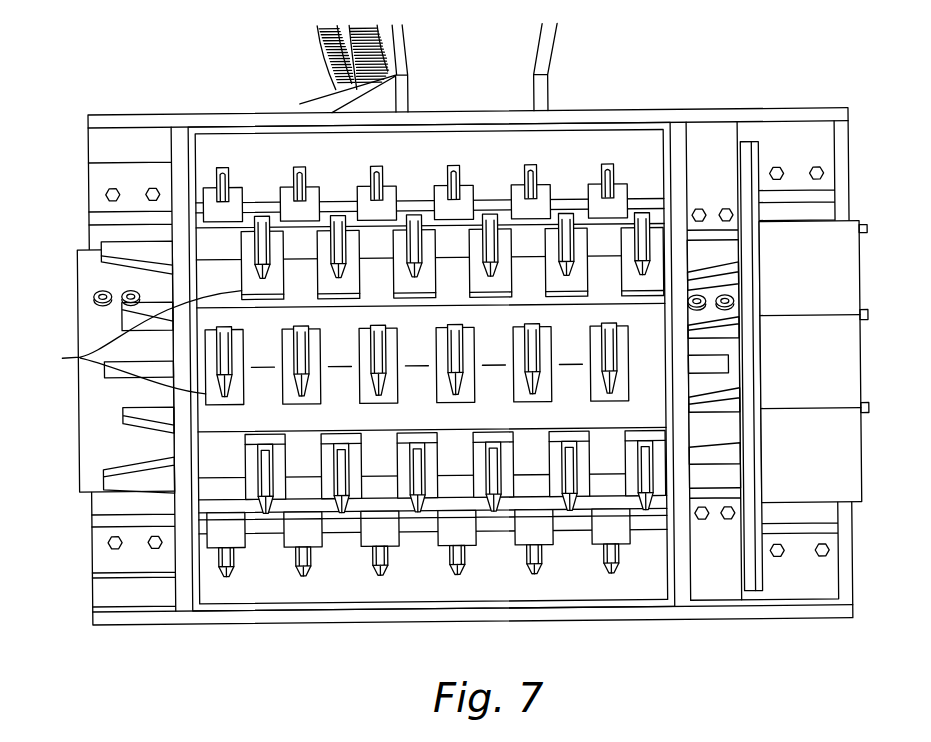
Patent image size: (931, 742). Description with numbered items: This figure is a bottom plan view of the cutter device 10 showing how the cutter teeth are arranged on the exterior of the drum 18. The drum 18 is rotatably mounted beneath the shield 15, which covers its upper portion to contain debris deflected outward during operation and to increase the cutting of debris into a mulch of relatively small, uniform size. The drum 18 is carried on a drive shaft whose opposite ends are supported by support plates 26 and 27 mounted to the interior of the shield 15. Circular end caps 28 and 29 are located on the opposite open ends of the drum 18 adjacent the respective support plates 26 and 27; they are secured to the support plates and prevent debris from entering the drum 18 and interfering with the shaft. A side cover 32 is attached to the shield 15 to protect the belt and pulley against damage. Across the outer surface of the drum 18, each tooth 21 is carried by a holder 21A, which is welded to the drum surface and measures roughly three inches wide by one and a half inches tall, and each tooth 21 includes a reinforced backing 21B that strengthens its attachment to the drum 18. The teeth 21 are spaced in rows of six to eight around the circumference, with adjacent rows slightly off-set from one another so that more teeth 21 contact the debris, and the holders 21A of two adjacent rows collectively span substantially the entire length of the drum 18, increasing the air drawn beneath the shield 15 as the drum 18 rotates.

The cutter device 10 is at (464, 355).
The shield 15 is at (803, 108).
The drum 18 is at (264, 541).
The tooth 21 is at (442, 128).
The holder 21A is at (238, 196).
The reinforced backing 21B is at (229, 187).
The support plate 26 is at (690, 163).
The support plate 27 is at (180, 160).
The end cap 28 is at (706, 477).
The end cap 29 is at (140, 456).
The side cover 32 is at (853, 228).